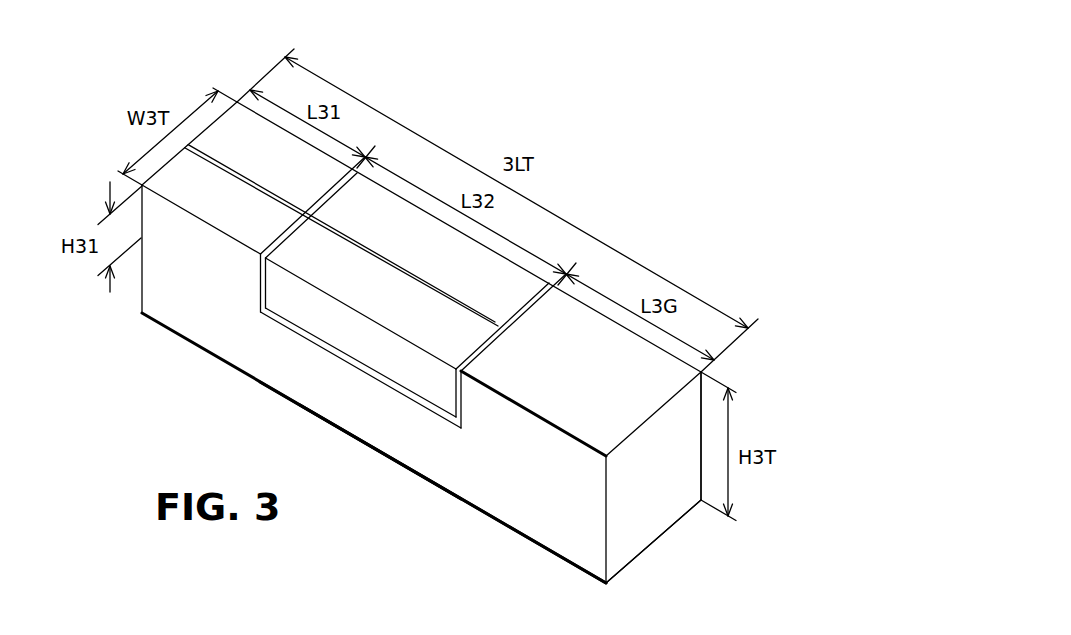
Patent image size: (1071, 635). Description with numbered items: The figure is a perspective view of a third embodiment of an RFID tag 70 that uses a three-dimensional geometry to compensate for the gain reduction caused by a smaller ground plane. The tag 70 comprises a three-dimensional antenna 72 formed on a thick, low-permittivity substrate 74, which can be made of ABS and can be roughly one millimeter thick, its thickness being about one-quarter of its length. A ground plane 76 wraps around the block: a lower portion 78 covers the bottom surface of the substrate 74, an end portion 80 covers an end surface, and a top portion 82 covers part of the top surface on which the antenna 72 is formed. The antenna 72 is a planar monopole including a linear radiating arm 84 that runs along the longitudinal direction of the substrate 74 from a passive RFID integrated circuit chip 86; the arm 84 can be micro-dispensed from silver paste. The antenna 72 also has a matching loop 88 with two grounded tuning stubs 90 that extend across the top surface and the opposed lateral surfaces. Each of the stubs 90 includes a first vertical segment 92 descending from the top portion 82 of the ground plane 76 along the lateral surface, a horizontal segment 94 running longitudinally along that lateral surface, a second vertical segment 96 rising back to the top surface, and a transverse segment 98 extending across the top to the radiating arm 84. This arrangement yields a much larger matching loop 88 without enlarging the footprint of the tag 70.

The RFID tag 70 is at (677, 200).
The three-dimensional antenna 72 is at (178, 313).
The substrate 74 is at (452, 472).
The ground plane 76 is at (701, 534).
The lower portion 78 is at (528, 540).
The end portion 80 is at (637, 547).
The top portion 82 is at (590, 433).
The linear radiating arm 84 is at (240, 176).
The passive RFID integrated circuit chip 86 is at (482, 326).
The matching loop 88 is at (327, 401).
The grounded tuning stubs 90 is at (393, 283).
The first vertical segment 92 is at (462, 400).
The horizontal segment 94 is at (353, 360).
The second vertical segment 96 is at (262, 282).
The transverse segment 98 is at (335, 192).